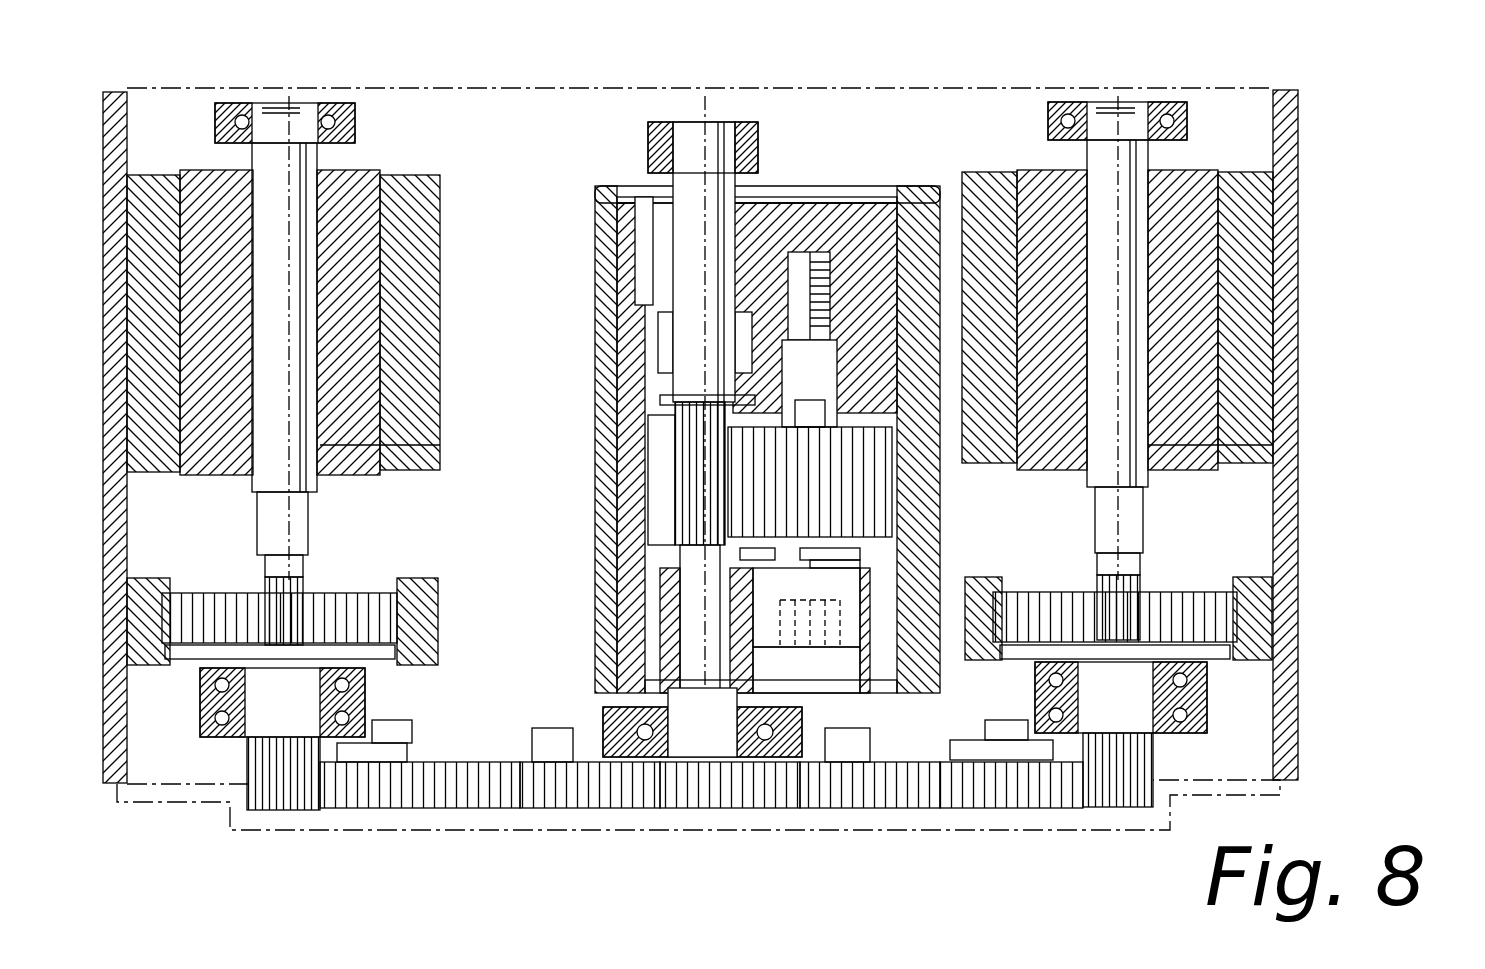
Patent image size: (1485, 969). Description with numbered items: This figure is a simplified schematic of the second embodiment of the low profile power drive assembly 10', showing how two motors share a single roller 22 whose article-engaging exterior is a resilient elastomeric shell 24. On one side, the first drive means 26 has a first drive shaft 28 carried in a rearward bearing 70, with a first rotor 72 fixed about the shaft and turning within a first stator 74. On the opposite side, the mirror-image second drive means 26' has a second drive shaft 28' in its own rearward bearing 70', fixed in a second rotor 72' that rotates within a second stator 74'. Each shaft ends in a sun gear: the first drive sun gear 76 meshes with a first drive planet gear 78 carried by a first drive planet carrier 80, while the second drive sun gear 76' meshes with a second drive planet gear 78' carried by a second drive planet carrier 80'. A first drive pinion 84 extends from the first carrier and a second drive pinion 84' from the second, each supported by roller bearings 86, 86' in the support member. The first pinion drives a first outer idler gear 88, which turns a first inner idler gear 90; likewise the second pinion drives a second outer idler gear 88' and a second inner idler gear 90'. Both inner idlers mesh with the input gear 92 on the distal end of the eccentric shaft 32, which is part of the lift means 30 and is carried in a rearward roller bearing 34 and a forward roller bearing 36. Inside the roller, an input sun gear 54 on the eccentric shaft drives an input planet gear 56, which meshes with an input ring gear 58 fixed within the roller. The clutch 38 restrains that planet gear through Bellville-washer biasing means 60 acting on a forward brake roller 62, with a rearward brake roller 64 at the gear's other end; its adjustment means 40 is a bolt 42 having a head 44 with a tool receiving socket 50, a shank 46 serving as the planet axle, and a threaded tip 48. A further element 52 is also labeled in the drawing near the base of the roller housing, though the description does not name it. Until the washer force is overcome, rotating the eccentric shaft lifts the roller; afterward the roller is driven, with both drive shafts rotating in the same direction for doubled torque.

The low profile power drive assembly 10' is at (785, 454).
The roller 22 is at (595, 206).
The resilient elastomeric exterior shell 24 is at (612, 246).
The first drive means 26 is at (1129, 258).
The second drive means 26' is at (314, 295).
The first drive shaft 28 is at (1083, 338).
The second drive shaft 28' is at (252, 338).
The lift means 30 is at (680, 257).
The eccentric shaft 32 is at (690, 152).
The rearward roller bearing 34 is at (745, 121).
The forward roller bearing 36 is at (640, 730).
The clutch 38 is at (786, 557).
The adjustment means 40 is at (800, 643).
The bolt 42 is at (816, 345).
The head portion 44 is at (740, 585).
The shank portion 46 is at (808, 402).
The threaded tip 48 is at (802, 252).
The tool receiving socket 50 is at (702, 722).
The housing base 52 is at (862, 690).
The input sun gear 54 is at (700, 482).
The input planet gear 56 is at (860, 470).
The input ring gear 58 is at (660, 432).
The biasing means 60 is at (850, 562).
The forward brake roller 62 is at (830, 550).
The rearward brake roller 64 is at (760, 405).
The rearward bearing 70 is at (1123, 83).
The rearward bearing 70' is at (315, 87).
The first rotor 72 is at (1183, 482).
The second rotor 72' is at (350, 482).
The first stator 74 is at (1293, 436).
The second stator 74' is at (440, 477).
The first drive sun gear 76 is at (1156, 582).
The second drive sun gear 76' is at (325, 584).
The first drive planet gear 78 is at (1160, 587).
The second drive planet gear 78' is at (299, 589).
The first drive planet carrier 80 is at (1087, 676).
The second drive planet carrier 80' is at (260, 692).
The first drive pinion gear 84 is at (1164, 768).
The second drive pinion 84' is at (230, 811).
The roller bearings 86 is at (1146, 697).
The roller bearing 86' is at (324, 702).
The first outer idler gear 88 is at (1011, 802).
The second outer idler gear 88' is at (420, 802).
The first inner idler gear 90 is at (865, 806).
The second inner idler gear 90' is at (575, 806).
The input gear 92 is at (710, 790).